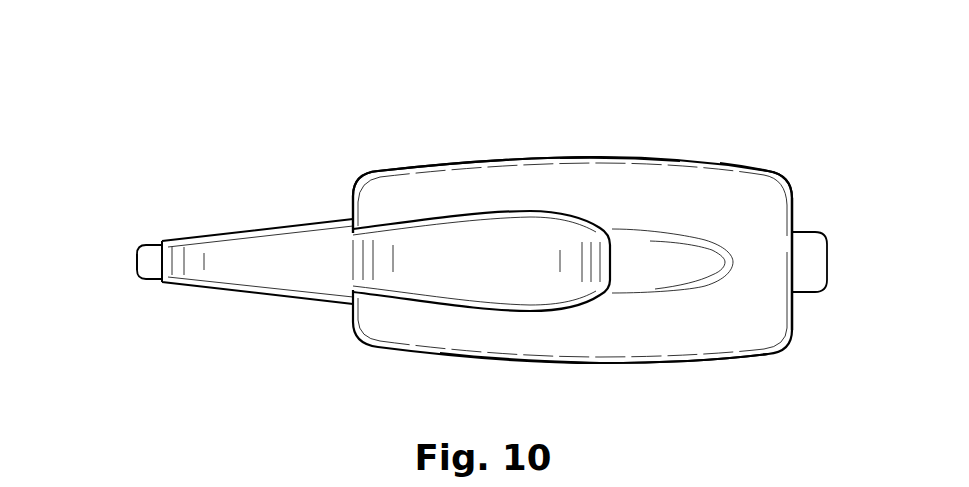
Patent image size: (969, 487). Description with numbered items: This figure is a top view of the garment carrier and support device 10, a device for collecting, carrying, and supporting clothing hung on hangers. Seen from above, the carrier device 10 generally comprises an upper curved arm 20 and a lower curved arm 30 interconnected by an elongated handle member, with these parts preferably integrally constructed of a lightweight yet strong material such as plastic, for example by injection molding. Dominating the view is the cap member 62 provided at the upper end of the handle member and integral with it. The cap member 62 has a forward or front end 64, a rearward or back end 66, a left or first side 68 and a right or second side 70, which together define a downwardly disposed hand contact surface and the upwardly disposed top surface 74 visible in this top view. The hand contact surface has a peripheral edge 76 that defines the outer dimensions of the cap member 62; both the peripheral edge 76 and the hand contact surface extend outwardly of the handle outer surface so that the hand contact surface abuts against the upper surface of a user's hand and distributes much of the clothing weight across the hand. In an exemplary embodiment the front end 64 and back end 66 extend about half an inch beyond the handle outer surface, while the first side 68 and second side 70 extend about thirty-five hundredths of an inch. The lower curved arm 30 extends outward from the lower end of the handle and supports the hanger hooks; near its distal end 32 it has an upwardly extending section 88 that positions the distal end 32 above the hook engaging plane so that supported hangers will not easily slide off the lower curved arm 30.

The garment carrier and support device 10 is at (735, 52).
The upper curved arm 20 is at (232, 252).
The lower curved arm 30 is at (327, 296).
The distal end 32 is at (148, 268).
The cap member 62 is at (695, 192).
The front end 64 is at (342, 205).
The back end 66 is at (803, 213).
The first side 68 is at (597, 155).
The second side 70 is at (661, 372).
The top surface 74 is at (745, 193).
The peripheral edge 76 is at (447, 166).
The upwardly extending section 88 is at (128, 257).